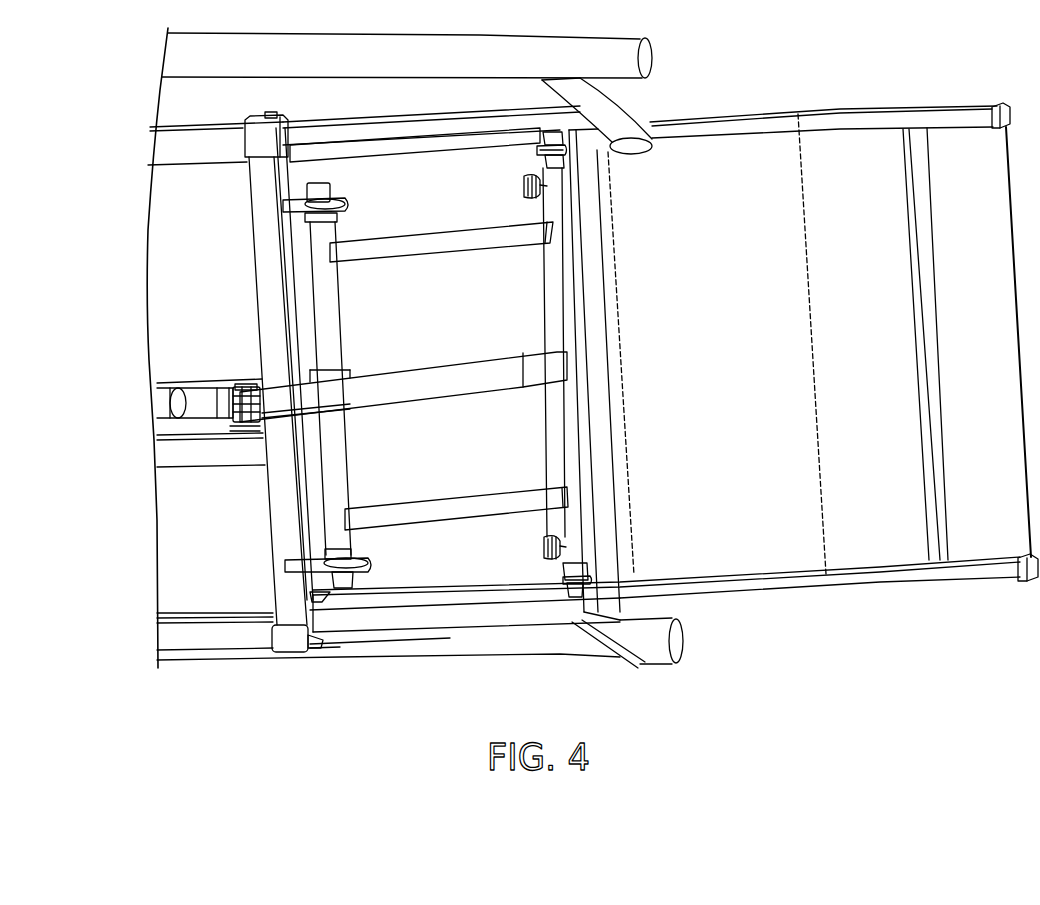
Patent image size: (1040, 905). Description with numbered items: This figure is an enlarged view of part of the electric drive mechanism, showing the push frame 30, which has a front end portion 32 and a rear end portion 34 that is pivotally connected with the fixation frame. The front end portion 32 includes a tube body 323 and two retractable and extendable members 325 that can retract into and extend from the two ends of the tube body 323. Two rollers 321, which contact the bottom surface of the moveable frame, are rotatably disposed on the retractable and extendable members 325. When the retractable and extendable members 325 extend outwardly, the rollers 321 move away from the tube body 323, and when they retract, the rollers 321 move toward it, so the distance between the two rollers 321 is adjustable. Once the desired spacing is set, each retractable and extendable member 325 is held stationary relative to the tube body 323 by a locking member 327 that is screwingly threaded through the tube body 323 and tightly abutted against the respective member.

The push frame 30 is at (442, 540).
The front end portion 32 is at (660, 375).
The tube body 323 is at (577, 527).
The rear end portion 34 is at (335, 493).
The roller 321 is at (578, 593).
The retractable and extendable member 325 is at (565, 572).
The locking member 327 is at (547, 553).